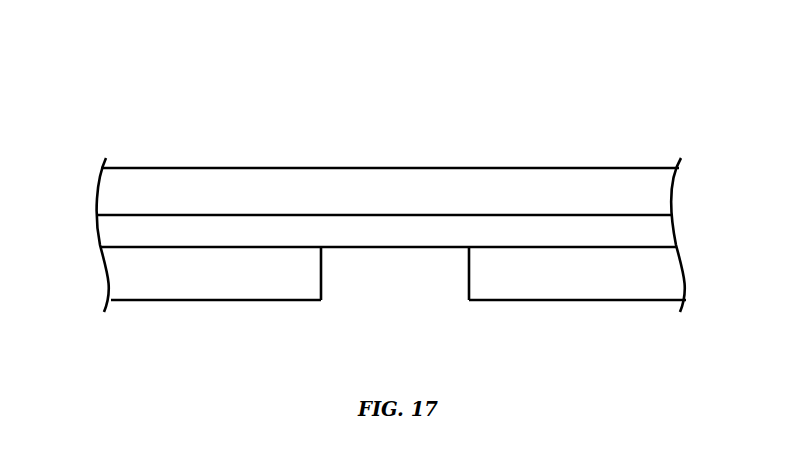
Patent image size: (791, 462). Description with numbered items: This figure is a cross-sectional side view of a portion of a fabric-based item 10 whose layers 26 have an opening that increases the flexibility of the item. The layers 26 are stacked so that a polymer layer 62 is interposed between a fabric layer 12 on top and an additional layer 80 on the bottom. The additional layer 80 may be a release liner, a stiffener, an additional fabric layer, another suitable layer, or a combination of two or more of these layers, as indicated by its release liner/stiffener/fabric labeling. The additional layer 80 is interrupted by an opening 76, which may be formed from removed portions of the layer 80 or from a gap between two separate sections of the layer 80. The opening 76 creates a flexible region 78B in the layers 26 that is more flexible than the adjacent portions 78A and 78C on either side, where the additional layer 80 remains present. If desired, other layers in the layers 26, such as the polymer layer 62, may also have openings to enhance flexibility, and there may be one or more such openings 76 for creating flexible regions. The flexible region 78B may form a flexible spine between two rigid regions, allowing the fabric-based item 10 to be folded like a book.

The fabric-based item 10 is at (641, 82).
The fabric layer 12 is at (103, 188).
The polymer layer 62 is at (106, 230).
The additional layer 80 is at (111, 268).
The opening 76 is at (321, 305).
The adjacent portion 78A is at (105, 143).
The flexible region 78B is at (468, 143).
The adjacent portion 78C is at (473, 143).
The layers 26 is at (708, 165).